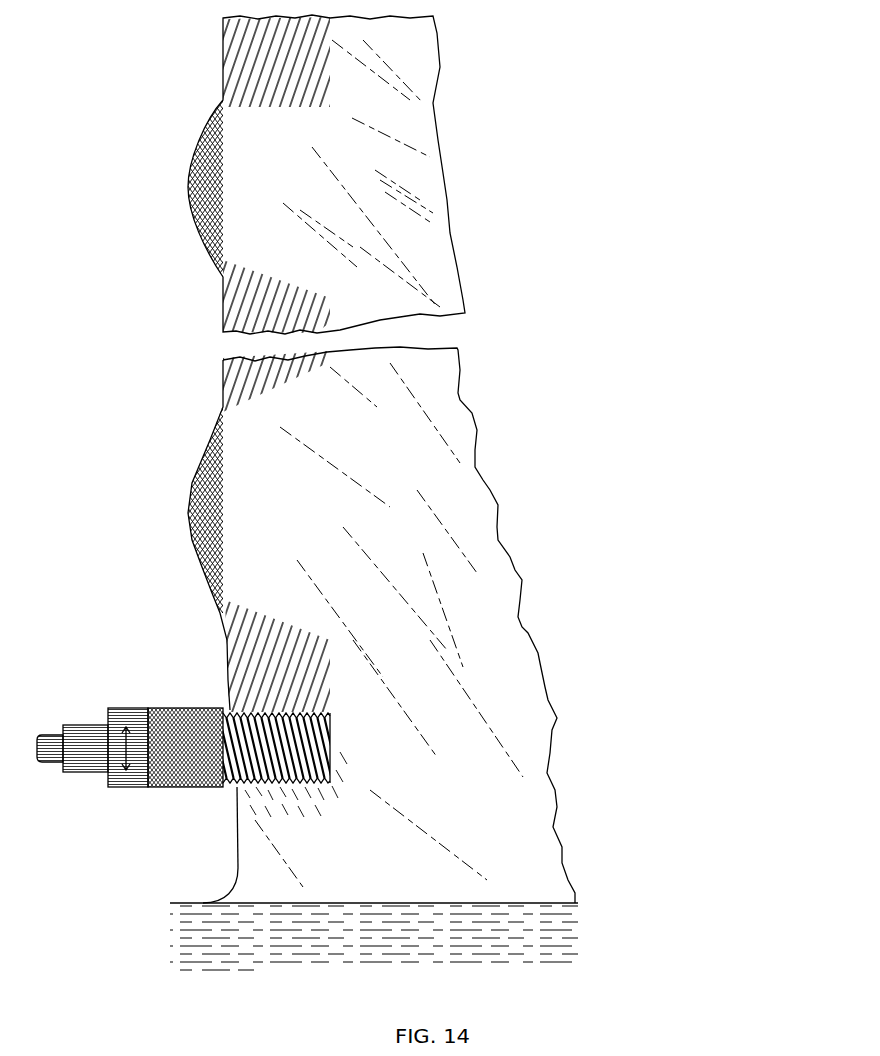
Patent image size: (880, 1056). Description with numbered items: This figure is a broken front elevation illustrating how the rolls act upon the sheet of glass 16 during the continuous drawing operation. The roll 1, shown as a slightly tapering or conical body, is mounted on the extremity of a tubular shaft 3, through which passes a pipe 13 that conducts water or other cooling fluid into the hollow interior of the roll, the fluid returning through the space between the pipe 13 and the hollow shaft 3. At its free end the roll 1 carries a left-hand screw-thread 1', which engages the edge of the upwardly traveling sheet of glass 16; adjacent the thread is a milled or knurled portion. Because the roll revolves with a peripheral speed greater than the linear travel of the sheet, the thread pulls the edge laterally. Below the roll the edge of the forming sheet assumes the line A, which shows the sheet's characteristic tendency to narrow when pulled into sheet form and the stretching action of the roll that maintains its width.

The sheet of glass 16 is at (206, 571).
The line of the sheet edge A is at (238, 847).
The pipe 13 is at (62, 737).
The tubular shaft 3 is at (90, 722).
The roll 1 is at (128, 719).
The left-hand screw-thread 1' is at (269, 717).